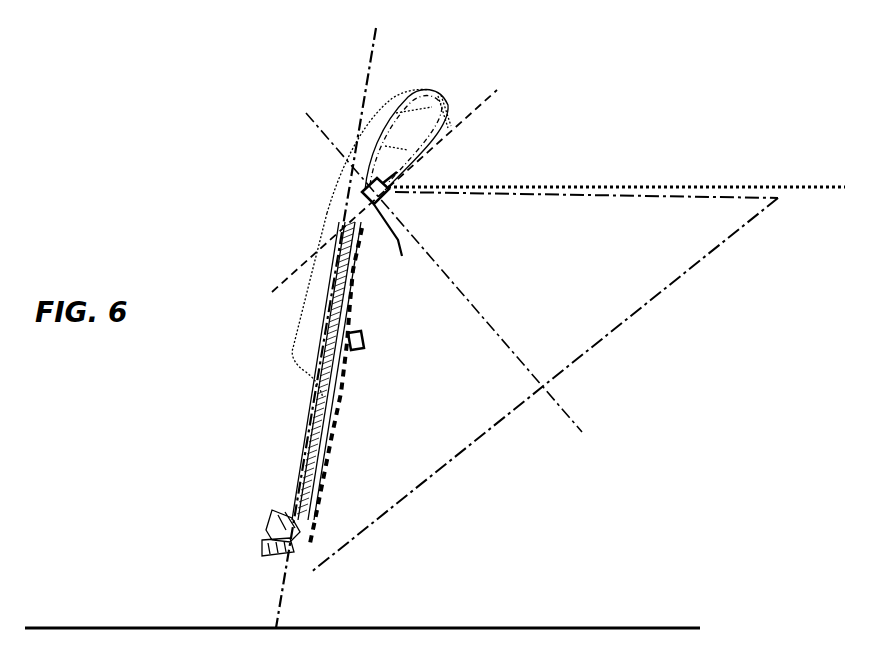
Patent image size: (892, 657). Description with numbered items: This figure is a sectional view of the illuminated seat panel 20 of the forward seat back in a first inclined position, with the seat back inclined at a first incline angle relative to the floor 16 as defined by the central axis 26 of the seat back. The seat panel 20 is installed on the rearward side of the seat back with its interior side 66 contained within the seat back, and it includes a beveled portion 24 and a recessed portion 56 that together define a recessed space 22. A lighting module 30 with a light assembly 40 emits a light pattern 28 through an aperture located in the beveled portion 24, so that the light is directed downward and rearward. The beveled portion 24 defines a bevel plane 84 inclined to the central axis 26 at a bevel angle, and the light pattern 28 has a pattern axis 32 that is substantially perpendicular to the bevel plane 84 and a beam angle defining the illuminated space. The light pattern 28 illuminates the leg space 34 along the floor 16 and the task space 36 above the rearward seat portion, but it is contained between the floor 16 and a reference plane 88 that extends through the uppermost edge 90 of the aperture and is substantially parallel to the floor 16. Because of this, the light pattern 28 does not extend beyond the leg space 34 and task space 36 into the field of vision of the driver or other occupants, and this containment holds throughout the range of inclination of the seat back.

The mounting surface 16 is at (75, 626).
The seat panel 20 is at (222, 288).
The recessed space 22 is at (380, 327).
The beveled portion 24 is at (389, 241).
The central axis of seat back 26 is at (362, 90).
The light pattern 28 is at (615, 368).
The lighting module 30 is at (340, 215).
The pattern axis 32 is at (322, 137).
The leg space 34 is at (393, 471).
The task space 36 is at (606, 289).
The light assembly 40 is at (390, 195).
The recessed portion 56 is at (340, 379).
The interior side of seat panel 66 is at (272, 443).
The bevel plane 84 is at (468, 120).
The reference plane 88 is at (820, 186).
The uppermost edge of aperture 90 is at (388, 189).